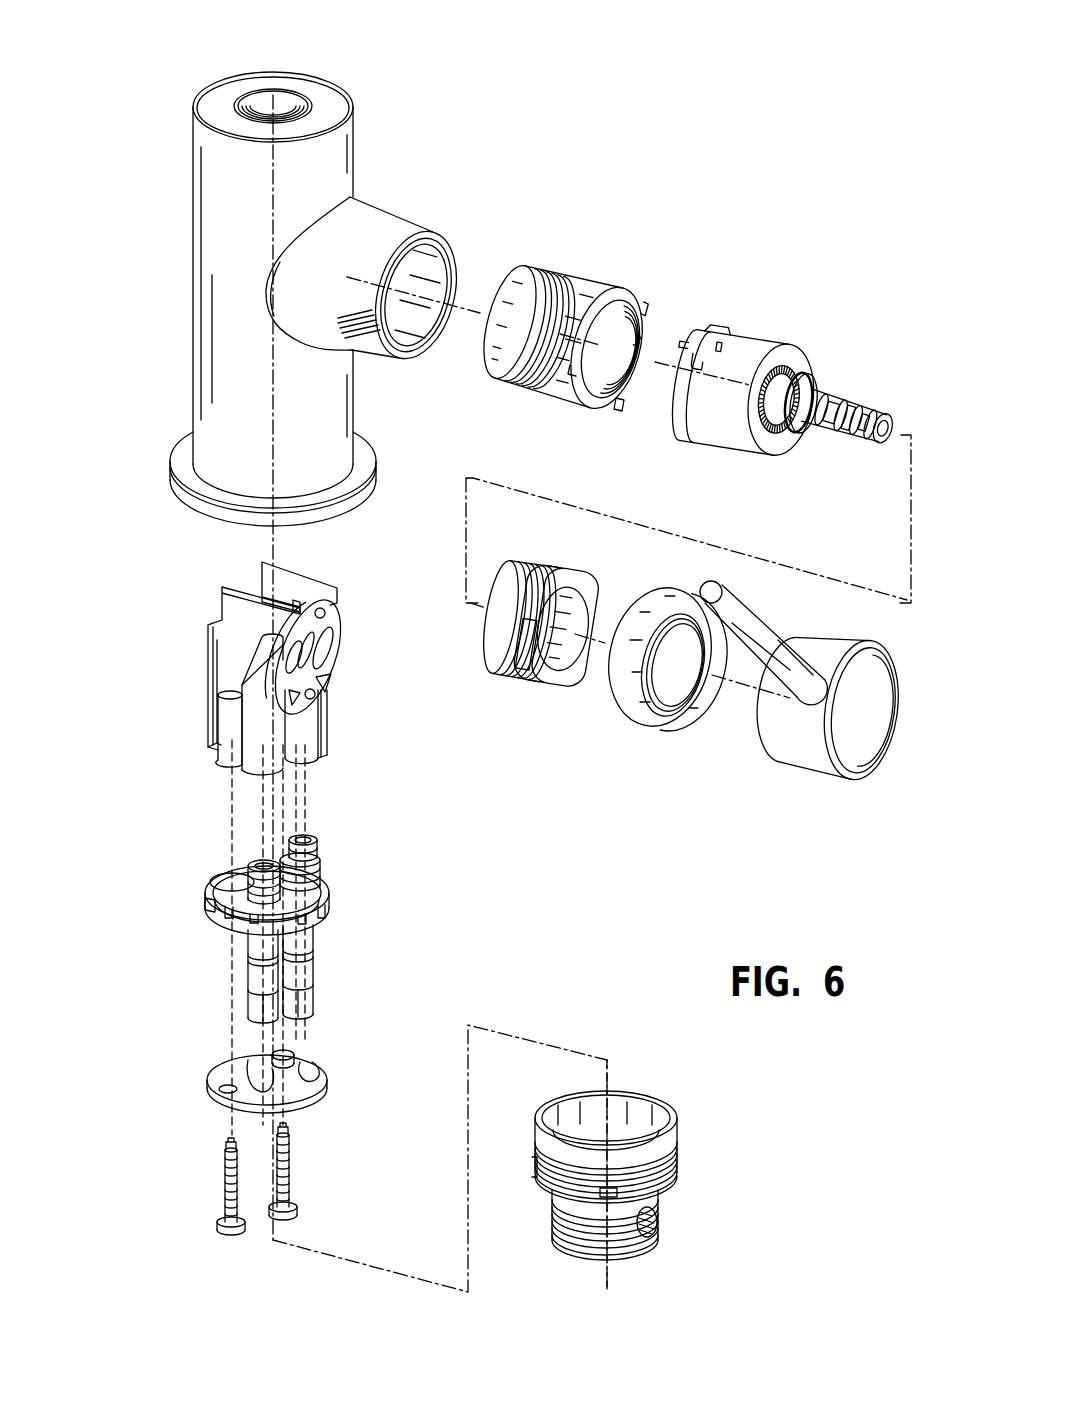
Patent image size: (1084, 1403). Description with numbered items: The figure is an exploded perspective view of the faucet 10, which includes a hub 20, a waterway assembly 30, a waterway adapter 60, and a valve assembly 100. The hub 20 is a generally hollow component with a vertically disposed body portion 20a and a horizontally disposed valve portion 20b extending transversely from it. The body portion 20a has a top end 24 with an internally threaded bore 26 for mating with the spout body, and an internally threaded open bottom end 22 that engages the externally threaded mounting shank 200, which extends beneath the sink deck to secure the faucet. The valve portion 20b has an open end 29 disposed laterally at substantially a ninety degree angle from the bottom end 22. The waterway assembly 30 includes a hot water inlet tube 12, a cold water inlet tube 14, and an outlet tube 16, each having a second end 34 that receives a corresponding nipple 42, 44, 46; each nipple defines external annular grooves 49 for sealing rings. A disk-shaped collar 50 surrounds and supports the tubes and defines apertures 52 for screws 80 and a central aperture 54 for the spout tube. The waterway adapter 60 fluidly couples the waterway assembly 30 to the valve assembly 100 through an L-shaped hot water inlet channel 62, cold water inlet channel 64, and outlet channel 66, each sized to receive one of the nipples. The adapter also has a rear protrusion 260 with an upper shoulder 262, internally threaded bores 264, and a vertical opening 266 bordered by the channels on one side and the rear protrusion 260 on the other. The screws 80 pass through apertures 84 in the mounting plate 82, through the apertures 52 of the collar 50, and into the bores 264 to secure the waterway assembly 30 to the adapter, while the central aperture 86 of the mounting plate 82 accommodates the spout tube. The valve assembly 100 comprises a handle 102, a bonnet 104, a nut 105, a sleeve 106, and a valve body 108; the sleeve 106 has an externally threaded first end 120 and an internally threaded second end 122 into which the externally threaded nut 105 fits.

The faucet 10 is at (724, 170).
The hot water inlet tube 12 is at (255, 983).
The cold water inlet tube 14 is at (300, 995).
The outlet tube 16 is at (318, 955).
The hub 20 is at (230, 192).
The body portion 20a is at (215, 432).
The valve portion 20b is at (376, 222).
The open bottom end 22 is at (212, 517).
The top end 24 is at (213, 105).
The internally threaded bore 26 is at (296, 92).
The open end 29 is at (408, 368).
The waterway assembly 30 is at (305, 917).
The second end 34 is at (384, 870).
The nipple 42 is at (245, 900).
The nipple 44 is at (318, 895).
The nipple 46 is at (317, 843).
The annular grooves 49 is at (340, 860).
The collar 50 is at (207, 918).
The apertures 52 is at (211, 899).
The central aperture 54 is at (231, 866).
The waterway adapter 60 is at (286, 700).
The hot water inlet channel 62 is at (243, 789).
The cold water inlet channel 64 is at (316, 778).
The outlet channel 66 is at (333, 767).
The screws 80 is at (290, 1173).
The mounting plate 82 is at (328, 1072).
The apertures 84 is at (273, 1102).
The central aperture 86 is at (233, 1063).
The valve assembly 100 is at (692, 747).
The handle 102 is at (800, 763).
The bonnet 104 is at (643, 722).
The nut 105 is at (507, 685).
The sleeve 106 is at (590, 282).
The valve body 108 is at (751, 345).
The first end 120 is at (586, 325).
The second end 122 is at (616, 412).
The mounting shank 200 is at (660, 1237).
The rear protrusion 260 is at (251, 643).
The upper shoulder 262 is at (216, 620).
The internally threaded bores 264 is at (212, 768).
The opening 266 is at (300, 582).